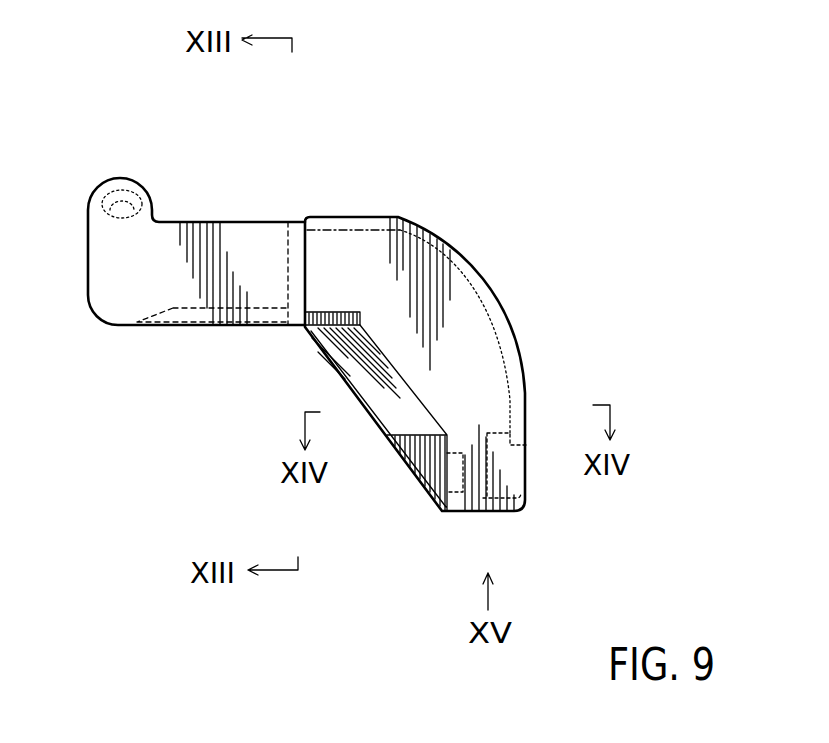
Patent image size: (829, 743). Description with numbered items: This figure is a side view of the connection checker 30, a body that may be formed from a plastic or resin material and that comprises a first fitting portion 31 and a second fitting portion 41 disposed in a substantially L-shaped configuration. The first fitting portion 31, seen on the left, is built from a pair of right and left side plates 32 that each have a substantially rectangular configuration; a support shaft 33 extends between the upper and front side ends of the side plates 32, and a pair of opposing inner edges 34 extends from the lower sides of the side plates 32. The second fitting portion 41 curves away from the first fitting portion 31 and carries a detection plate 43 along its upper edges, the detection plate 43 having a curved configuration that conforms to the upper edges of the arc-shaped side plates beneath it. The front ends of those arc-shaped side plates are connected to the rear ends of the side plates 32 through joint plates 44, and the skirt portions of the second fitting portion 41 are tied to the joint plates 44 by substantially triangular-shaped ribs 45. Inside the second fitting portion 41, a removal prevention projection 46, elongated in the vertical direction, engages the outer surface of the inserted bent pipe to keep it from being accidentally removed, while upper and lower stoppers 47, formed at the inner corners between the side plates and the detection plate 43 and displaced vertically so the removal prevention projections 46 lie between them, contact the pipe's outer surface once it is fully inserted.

The connection checker 30 is at (464, 237).
The first fitting portion 31 is at (201, 207).
The side plates 32 is at (260, 232).
The support shaft 33 is at (113, 177).
The inner edges 34 is at (212, 327).
The second fitting portion 41 is at (517, 323).
The detection plate 43 is at (476, 277).
The joint plates 44 is at (308, 268).
The ribs 45 is at (313, 333).
The removal prevention projections 46 is at (438, 498).
The stoppers 47 is at (502, 427).